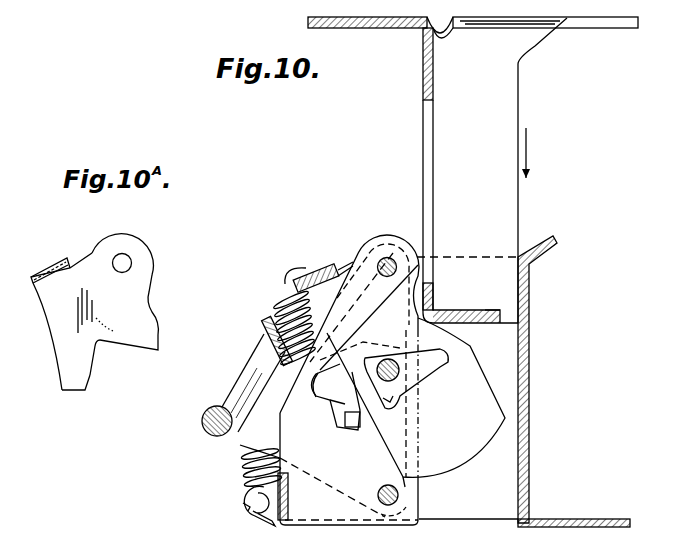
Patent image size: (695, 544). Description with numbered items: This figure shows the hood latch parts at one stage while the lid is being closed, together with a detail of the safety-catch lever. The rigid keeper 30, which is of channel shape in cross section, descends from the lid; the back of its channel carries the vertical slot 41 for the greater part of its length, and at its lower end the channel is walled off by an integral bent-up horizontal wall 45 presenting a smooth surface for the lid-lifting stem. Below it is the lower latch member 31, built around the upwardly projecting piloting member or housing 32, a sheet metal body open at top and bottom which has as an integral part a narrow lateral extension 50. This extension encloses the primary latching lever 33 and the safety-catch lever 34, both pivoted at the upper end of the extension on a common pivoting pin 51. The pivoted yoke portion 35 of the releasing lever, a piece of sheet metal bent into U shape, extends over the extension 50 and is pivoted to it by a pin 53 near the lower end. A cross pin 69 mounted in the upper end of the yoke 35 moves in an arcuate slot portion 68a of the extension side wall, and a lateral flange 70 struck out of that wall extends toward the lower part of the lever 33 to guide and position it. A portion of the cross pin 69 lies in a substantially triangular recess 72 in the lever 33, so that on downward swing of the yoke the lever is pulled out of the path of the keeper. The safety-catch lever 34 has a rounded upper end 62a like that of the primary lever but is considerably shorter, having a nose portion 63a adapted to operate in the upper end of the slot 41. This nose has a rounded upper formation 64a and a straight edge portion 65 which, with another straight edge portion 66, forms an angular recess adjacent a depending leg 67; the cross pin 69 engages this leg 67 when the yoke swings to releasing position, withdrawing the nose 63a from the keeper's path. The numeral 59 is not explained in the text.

In FIG. 10, the rigid keeper 30 is at (511, 93).
In FIG. 10, the lower latch member 31 is at (531, 386).
In FIG. 10, the piloting member or housing 32 is at (524, 450).
In FIG. 10, the primary latching lever 33 is at (442, 430).
In FIG. 10, the safety-catch lever 34 is at (470, 303).
In FIG. 10, the pivoted yoke portion of the releasing lever 35 is at (268, 388).
In FIG. 10, the vertical slot 41 is at (428, 202).
In FIG. 10, the bent-up horizontal wall 45 is at (484, 310).
In FIG. 10, the lateral extension 50 is at (316, 470).
In FIG. 10, the common pivoting pin 51 is at (388, 258).
In FIG. 10, the pivot pin 53 is at (399, 496).
In FIG. 10A, the tab 59 is at (49, 272).
In FIG. 10A, the rounded upper end 62a is at (144, 244).
In FIG. 10A, the nose portion 63a is at (158, 340).
In FIG. 10A, the rounded upper formation 64a is at (155, 313).
In FIG. 10A, the straight edge portion 65 is at (133, 350).
In FIG. 10A, the straight edge portion 66 is at (91, 372).
In FIG. 10, the depending leg 67 is at (321, 388).
In FIG. 10A, the depending leg 67 is at (72, 372).
In FIG. 10, the arcuate slot portion 68a is at (343, 373).
In FIG. 10, the cross pin 69 is at (400, 374).
In FIG. 10, the lateral flange 70 is at (359, 422).
In FIG. 10, the triangular recess 72 is at (444, 362).